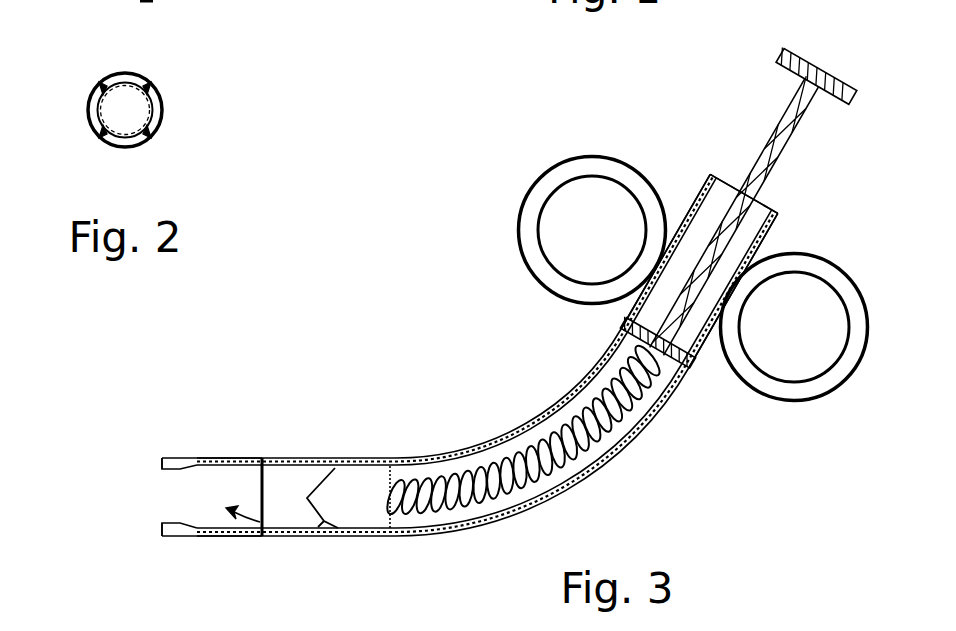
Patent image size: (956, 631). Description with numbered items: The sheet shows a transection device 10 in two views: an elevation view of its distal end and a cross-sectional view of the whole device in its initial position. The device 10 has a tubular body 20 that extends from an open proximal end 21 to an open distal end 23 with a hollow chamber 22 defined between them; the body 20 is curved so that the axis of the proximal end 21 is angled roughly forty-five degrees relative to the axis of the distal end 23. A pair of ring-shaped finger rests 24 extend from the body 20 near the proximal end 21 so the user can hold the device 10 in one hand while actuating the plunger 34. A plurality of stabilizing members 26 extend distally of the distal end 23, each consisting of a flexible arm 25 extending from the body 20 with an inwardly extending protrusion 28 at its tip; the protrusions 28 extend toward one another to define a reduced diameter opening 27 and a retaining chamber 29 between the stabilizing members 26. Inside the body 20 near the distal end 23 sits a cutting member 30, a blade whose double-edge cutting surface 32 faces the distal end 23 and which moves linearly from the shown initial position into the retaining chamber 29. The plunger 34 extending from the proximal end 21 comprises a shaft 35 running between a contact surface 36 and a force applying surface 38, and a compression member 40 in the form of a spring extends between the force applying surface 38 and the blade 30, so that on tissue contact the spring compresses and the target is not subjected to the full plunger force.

In FIG. 3, the transection device 10 is at (412, 272).
In FIG. 3, the tubular body 20 is at (528, 420).
In FIG. 3, the proximal end 21 is at (758, 200).
In FIG. 3, the hollow chamber 22 is at (693, 230).
In FIG. 2, the distal end 23 is at (163, 111).
In FIG. 3, the distal end 23 is at (262, 463).
In FIG. 3, the finger rests 24 is at (567, 168).
In FIG. 3, the flexible arm 25 is at (223, 458).
In FIG. 3, the stabilizing members 26 is at (193, 458).
In FIG. 2, the reduced diameter opening 27 is at (98, 104).
In FIG. 3, the reduced diameter opening 27 is at (168, 497).
In FIG. 2, the protrusion 28 is at (103, 82).
In FIG. 3, the protrusion 28 is at (160, 468).
In FIG. 3, the retaining chamber 29 is at (273, 535).
In FIG. 3, the cutting member 30 is at (357, 477).
In FIG. 3, the double-edge cutting surface 32 is at (315, 530).
In FIG. 3, the plunger 34 is at (801, 132).
In FIG. 3, the shaft 35 is at (767, 151).
In FIG. 3, the contact surface 36 is at (824, 68).
In FIG. 3, the force applying surface 38 is at (679, 375).
In FIG. 3, the compression member 40 is at (612, 457).